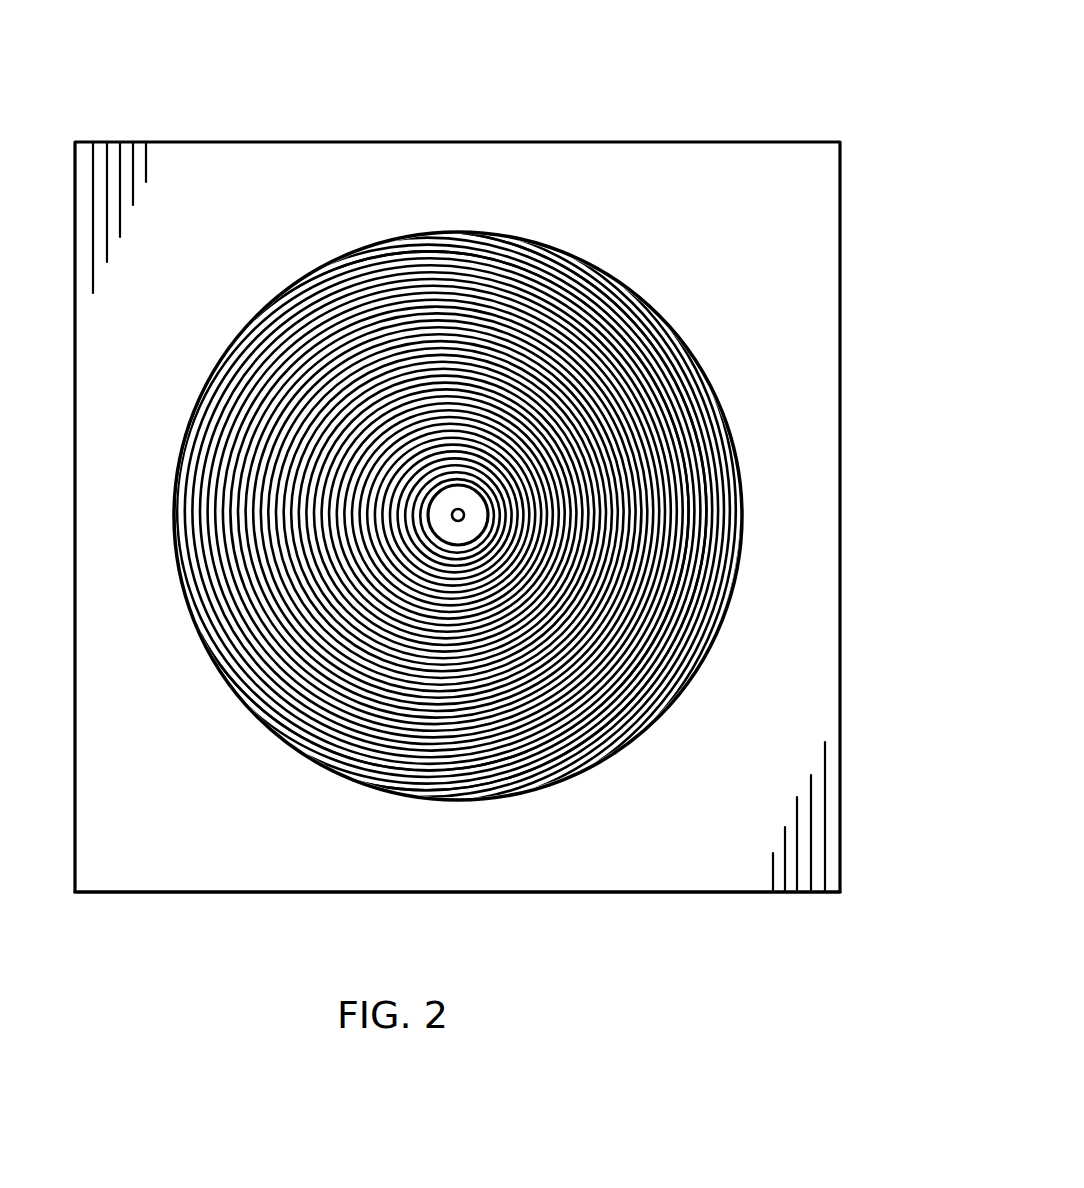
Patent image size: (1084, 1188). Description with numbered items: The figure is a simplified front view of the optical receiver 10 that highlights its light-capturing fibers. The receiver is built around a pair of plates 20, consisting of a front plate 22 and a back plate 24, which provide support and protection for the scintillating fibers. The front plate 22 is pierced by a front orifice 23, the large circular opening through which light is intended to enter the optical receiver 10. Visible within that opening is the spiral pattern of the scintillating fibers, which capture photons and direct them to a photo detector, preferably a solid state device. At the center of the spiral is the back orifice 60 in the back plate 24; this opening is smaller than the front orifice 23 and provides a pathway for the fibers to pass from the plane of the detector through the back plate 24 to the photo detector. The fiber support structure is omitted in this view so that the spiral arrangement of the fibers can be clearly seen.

The optical receiver 10 is at (600, 942).
The pair of plates 20 is at (708, 905).
The front plate 22 is at (723, 878).
The front orifice 23 is at (335, 263).
The back plate 24 is at (372, 260).
The back orifice 60 is at (458, 510).